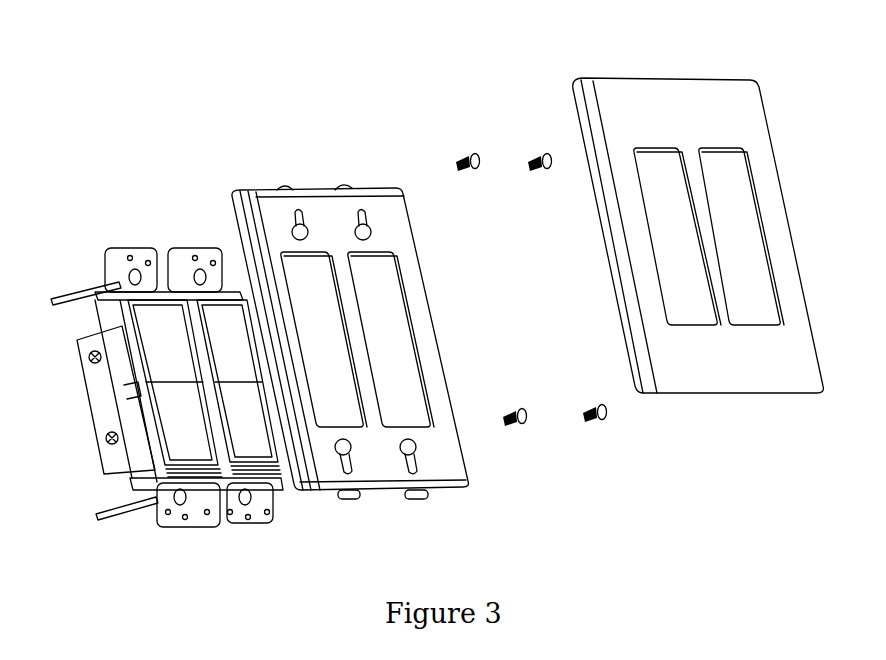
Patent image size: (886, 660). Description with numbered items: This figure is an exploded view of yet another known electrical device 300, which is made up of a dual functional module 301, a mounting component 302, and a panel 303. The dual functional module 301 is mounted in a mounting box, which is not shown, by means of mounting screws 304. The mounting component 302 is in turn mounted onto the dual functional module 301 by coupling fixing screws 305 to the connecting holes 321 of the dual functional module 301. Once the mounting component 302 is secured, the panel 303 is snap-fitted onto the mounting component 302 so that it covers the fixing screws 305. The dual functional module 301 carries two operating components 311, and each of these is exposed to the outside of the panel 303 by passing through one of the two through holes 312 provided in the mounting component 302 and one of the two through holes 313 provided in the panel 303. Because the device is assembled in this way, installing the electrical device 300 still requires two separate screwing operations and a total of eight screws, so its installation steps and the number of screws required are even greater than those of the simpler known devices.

The electrical device 300 is at (362, 108).
The dual functional module 301 is at (137, 367).
The mounting component 302 is at (268, 208).
The panel 303 is at (683, 102).
The mounting screws 304 is at (87, 283).
The fixing screws 305 is at (580, 413).
The operating component 311 is at (178, 415).
The through holes 312 is at (373, 282).
The through holes 313 is at (732, 207).
The connecting holes 321 is at (250, 513).